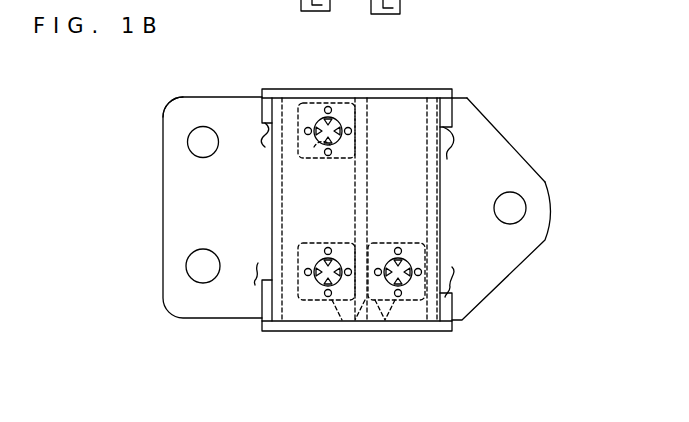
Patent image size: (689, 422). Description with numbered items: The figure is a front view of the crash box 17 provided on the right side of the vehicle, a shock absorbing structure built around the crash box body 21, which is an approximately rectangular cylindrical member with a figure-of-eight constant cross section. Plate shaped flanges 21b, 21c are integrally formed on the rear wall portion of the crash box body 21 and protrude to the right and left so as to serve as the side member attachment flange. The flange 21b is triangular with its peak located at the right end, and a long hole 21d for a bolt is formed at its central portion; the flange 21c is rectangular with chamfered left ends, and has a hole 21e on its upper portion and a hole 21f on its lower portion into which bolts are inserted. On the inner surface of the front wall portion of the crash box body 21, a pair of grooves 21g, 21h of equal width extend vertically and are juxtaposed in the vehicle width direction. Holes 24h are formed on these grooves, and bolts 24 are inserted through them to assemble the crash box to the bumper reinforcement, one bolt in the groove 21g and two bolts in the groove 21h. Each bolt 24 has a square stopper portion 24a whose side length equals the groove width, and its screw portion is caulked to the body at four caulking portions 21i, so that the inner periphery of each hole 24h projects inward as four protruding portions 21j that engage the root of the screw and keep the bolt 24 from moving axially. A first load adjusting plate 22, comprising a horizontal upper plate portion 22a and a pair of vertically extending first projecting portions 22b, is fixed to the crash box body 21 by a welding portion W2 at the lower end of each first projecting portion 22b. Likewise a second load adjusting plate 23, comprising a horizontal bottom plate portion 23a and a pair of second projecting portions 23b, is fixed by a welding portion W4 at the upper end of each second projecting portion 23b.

The crash box 17 is at (563, 100).
The crash box body 21 is at (442, 212).
The flange 21b is at (508, 147).
The flange 21c is at (163, 110).
The long hole 21d is at (526, 215).
The hole 21e is at (207, 157).
The hole 21f is at (215, 280).
The groove 21g is at (370, 186).
The groove 21h is at (356, 186).
The caulking portions 21i is at (327, 106).
The protruding portions 21j is at (320, 297).
The first load adjusting plate 22 is at (399, 88).
The upper plate portion 22a is at (352, 88).
The first projecting portions 22b is at (263, 98).
The second load adjusting plate 23 is at (409, 333).
The bottom plate portion 23a is at (297, 333).
The second projecting portions 23b is at (262, 320).
The bolt 24 is at (314, 139).
The stopper portion 24a is at (360, 158).
The holes 24h is at (314, 147).
The welding portion W2 is at (263, 133).
The welding portion W4 is at (357, 270).